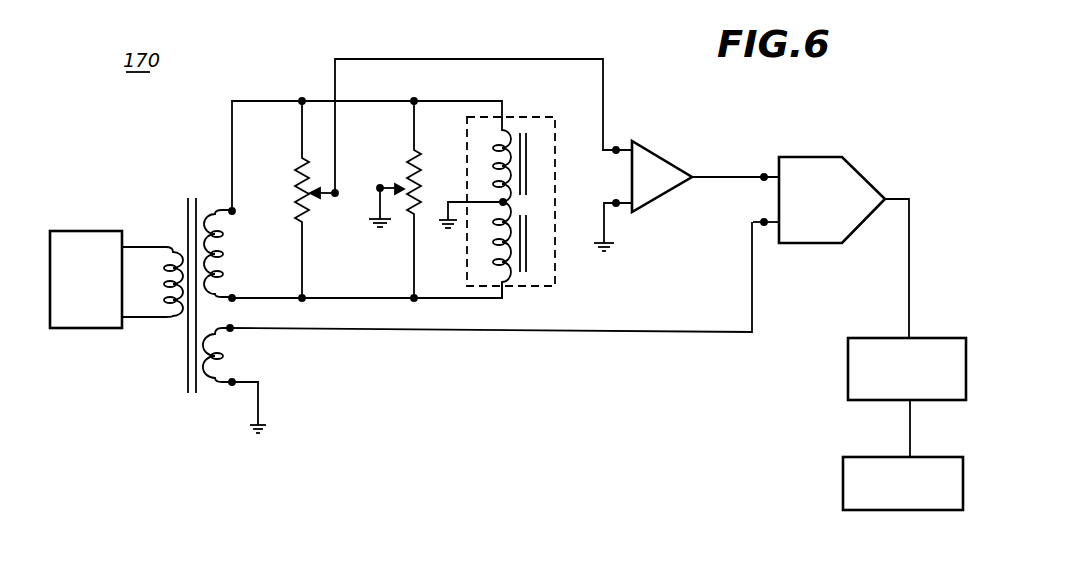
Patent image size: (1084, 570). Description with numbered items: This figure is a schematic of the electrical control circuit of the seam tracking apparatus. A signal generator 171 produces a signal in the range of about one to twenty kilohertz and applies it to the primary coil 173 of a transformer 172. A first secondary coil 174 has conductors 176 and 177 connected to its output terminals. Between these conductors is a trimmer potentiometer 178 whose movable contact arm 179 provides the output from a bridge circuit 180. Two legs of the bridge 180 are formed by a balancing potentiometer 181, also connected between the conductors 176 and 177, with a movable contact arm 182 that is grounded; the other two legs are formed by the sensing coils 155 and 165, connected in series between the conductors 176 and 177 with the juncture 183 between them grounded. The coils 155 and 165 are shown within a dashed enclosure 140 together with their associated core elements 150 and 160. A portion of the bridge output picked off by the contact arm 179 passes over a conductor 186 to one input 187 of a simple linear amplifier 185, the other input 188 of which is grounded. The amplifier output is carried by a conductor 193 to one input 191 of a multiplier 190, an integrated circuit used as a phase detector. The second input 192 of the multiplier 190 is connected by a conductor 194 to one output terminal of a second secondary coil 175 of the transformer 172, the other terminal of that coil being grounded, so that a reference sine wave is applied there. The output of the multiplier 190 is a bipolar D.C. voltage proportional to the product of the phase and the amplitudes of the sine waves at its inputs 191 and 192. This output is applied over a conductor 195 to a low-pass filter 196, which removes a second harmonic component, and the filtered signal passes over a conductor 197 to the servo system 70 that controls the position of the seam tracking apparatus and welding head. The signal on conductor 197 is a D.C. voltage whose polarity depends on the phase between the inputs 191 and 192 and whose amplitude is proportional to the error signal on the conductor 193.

The signal generator 171 is at (92, 230).
The transformer 172 is at (176, 376).
The primary coil 173 is at (167, 320).
The first secondary coil 174 is at (223, 248).
The second secondary coil 175 is at (222, 362).
The conductor 176 is at (253, 100).
The conductor 177 is at (265, 300).
The trimmer potentiometer 178 is at (298, 167).
The movable contact arm 179 is at (326, 196).
The bridge circuit 180 is at (443, 90).
The balancing potentiometer 181 is at (412, 160).
The movable contact arm 182 is at (392, 187).
The sensing transformer assembly 140 is at (525, 115).
The coil 155 is at (495, 160).
The juncture 183 is at (500, 201).
The coil 165 is at (498, 255).
The upper core 150 is at (538, 165).
The lower core 160 is at (540, 251).
The conductor 186 is at (478, 60).
The input 187 is at (623, 143).
The input 188 is at (622, 207).
The amplifier 185 is at (659, 149).
The conductor 193 is at (725, 179).
The input 191 is at (770, 173).
The multiplier 190 is at (817, 157).
The second input 192 is at (773, 225).
The conductor 194 is at (603, 335).
The conductor 195 is at (910, 247).
The low-pass filter 196 is at (848, 367).
The conductor 197 is at (910, 420).
The servo system 70 is at (843, 485).